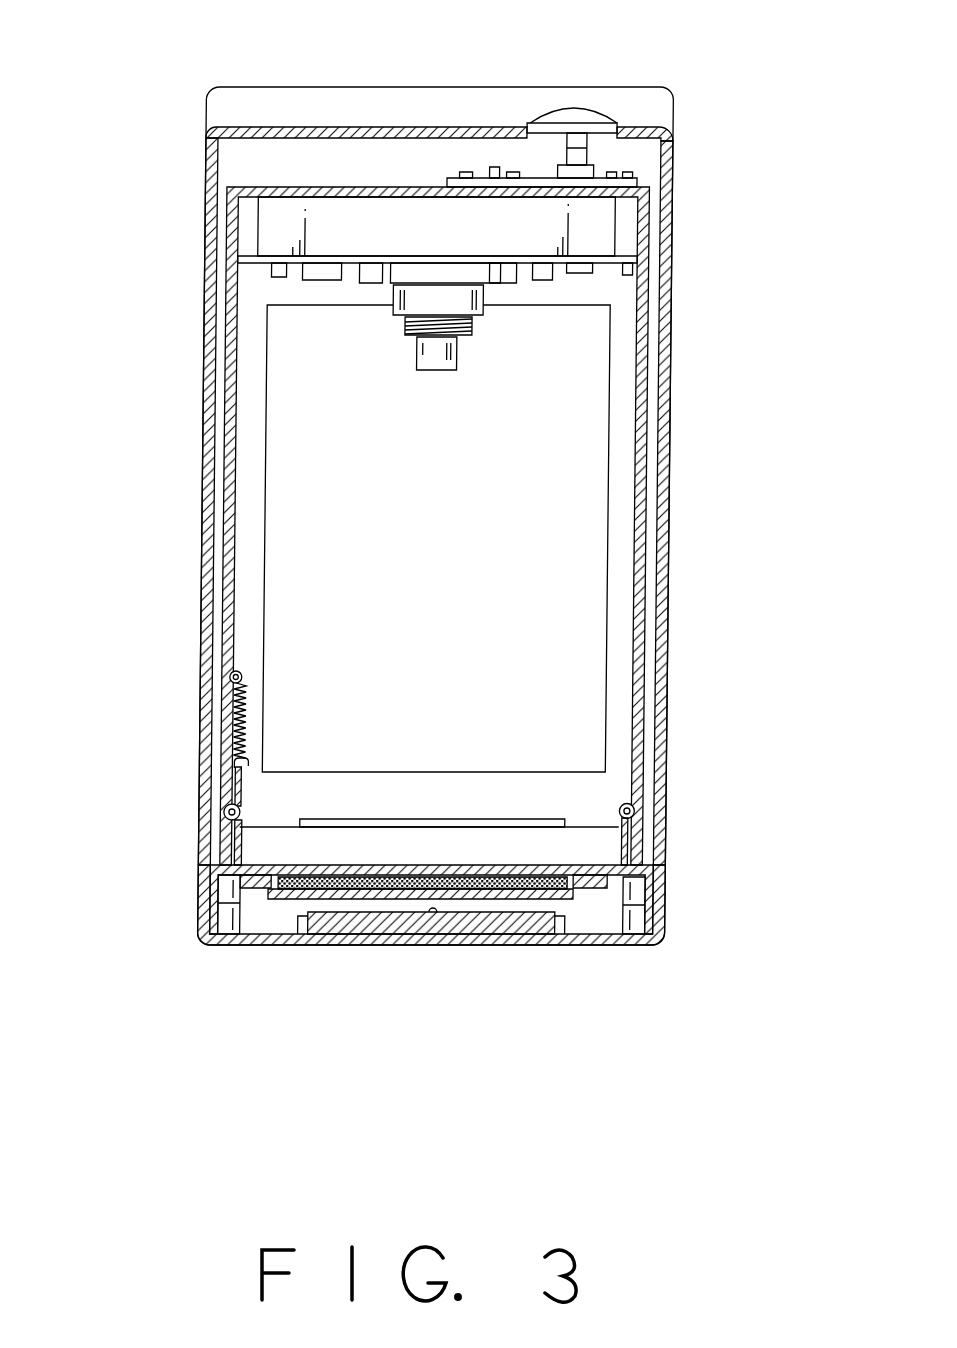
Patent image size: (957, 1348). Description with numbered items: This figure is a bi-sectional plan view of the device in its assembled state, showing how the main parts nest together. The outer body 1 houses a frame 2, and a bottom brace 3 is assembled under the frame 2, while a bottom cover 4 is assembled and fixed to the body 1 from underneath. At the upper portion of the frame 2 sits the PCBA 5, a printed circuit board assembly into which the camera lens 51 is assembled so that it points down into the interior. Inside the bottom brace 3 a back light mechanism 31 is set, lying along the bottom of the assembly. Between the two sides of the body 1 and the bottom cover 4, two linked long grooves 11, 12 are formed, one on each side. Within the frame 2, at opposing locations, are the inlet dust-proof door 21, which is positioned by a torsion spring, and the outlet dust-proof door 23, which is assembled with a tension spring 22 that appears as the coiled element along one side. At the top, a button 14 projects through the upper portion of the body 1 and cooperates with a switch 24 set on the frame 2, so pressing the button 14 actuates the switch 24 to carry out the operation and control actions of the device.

The body 1 is at (203, 316).
The frame 2 is at (639, 419).
The bottom brace 3 is at (264, 887).
The bottom cover 4 is at (666, 913).
The PCBA 5 is at (255, 254).
The long groove 11 is at (663, 827).
The long groove 12 is at (203, 828).
The button 14 is at (569, 117).
The inlet dust-proof door 21 is at (630, 845).
The tension spring 22 is at (240, 725).
The outlet dust-proof door 23 is at (246, 832).
The switch 24 is at (578, 157).
The back light mechanism 31 is at (477, 887).
The camera lens 51 is at (447, 358).